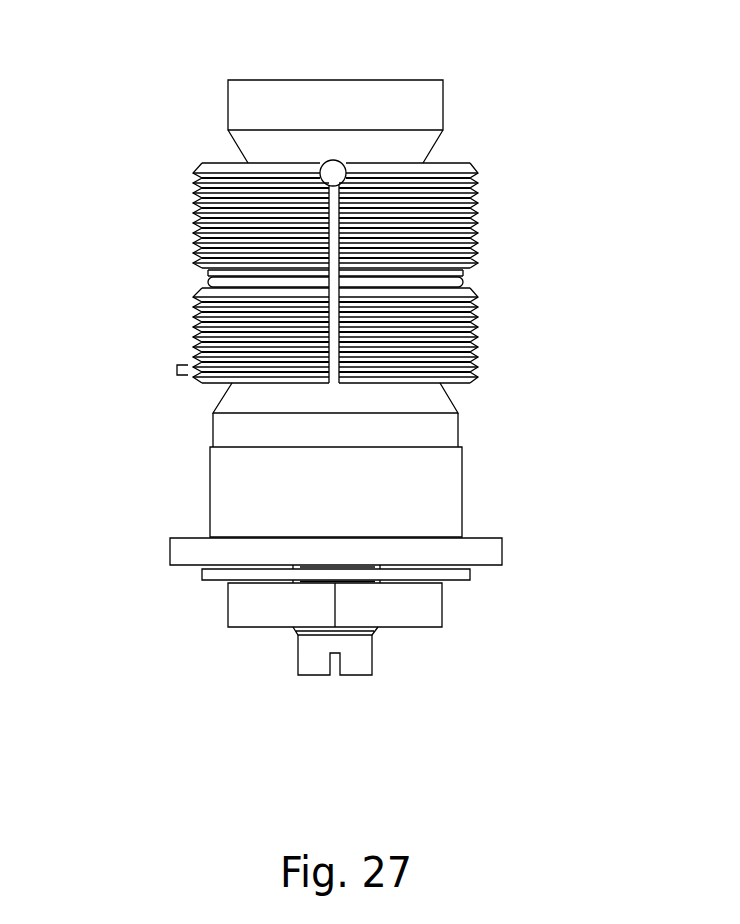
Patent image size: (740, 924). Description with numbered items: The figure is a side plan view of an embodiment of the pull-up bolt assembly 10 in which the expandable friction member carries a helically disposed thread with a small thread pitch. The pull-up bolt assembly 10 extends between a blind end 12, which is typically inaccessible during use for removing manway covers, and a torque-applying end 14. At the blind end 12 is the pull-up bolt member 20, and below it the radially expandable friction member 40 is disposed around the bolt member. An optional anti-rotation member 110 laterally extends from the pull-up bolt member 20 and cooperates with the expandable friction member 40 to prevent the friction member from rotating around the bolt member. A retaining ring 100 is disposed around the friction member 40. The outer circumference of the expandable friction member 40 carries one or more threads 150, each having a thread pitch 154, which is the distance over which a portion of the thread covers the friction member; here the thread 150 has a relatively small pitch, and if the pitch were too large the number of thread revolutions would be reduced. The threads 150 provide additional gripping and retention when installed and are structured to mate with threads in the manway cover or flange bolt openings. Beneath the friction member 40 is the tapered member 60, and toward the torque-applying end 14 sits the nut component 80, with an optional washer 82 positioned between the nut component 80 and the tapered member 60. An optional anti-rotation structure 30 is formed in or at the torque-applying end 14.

The pull-up bolt assembly 10 is at (158, 245).
The blind end 12 is at (258, 80).
The torque-applying end 14 is at (291, 559).
The pull-up bolt member 20 is at (443, 105).
The anti-rotation structure 30 is at (335, 673).
The radially expandable friction member 40 is at (458, 223).
The tapered member 60 is at (208, 483).
The nut component 80 is at (230, 607).
The washer 82 is at (202, 573).
The retaining ring 100 is at (465, 281).
The anti-rotation member 110 is at (332, 170).
The thread 150 is at (193, 307).
The thread pitch 154 is at (175, 370).